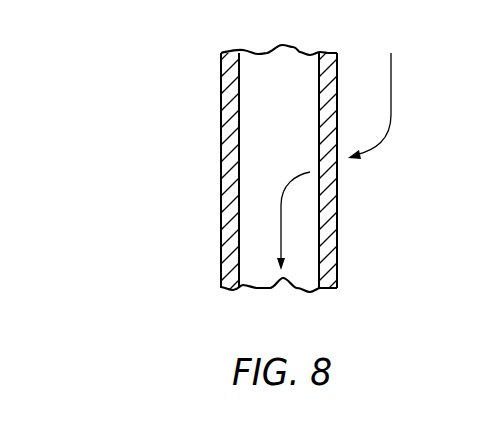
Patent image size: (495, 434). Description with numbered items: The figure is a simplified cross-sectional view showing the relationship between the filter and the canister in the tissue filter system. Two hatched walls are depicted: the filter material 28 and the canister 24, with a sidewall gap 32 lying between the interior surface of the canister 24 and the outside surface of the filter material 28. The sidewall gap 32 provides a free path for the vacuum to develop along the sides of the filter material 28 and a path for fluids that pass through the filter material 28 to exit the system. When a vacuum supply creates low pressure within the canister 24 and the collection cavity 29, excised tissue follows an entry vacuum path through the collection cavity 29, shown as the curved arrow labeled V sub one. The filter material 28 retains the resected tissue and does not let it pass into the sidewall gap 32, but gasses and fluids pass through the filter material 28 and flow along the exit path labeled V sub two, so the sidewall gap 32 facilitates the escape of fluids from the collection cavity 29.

The canister 24 is at (231, 106).
The filter material 28 is at (333, 267).
The sidewall gap 32 is at (277, 133).
The collection cavity 29 is at (406, 186).